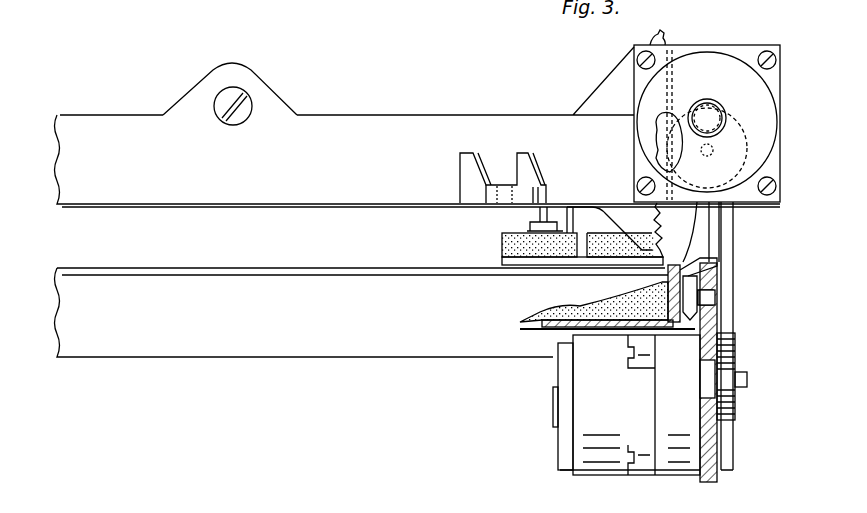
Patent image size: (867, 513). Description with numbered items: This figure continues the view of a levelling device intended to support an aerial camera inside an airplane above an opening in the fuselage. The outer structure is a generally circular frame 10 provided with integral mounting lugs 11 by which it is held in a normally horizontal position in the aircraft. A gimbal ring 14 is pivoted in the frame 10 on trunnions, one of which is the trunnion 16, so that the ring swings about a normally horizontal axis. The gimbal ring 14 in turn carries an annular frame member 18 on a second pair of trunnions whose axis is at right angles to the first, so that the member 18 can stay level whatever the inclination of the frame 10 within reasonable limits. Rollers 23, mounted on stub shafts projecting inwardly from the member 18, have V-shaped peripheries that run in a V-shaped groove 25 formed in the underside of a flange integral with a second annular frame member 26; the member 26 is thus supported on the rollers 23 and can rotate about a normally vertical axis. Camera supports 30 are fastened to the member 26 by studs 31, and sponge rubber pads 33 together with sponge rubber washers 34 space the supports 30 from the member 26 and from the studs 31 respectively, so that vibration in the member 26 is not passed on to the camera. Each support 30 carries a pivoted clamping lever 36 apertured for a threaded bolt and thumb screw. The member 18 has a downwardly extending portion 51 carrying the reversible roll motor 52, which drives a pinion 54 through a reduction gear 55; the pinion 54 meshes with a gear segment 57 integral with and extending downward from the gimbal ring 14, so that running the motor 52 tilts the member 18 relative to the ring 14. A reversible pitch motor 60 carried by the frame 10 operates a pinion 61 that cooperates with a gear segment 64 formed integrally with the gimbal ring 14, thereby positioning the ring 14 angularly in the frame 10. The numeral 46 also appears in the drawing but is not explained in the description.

The circular frame 10 is at (414, 128).
The mounting lug 11 is at (466, 200).
The gimbal ring 14 is at (350, 206).
The trunnion 16 is at (247, 104).
The annular frame member 18 is at (408, 355).
The roller 23 is at (715, 310).
The V-shaped groove 25 is at (710, 261).
The annular frame member 26 is at (556, 330).
The camera support 30 is at (500, 262).
The stud 31 is at (538, 218).
The sponge rubber pad 33 is at (590, 305).
The sponge rubber washer 34 is at (504, 243).
The clamping lever 36 is at (565, 208).
The lead 46 is at (186, 0).
The downwardly extending portion 51 is at (718, 447).
The roll motor 52 is at (620, 409).
The pinion 54 is at (735, 357).
The reduction gear 55 is at (688, 466).
The gear segment 57 is at (725, 319).
The pitch motor 60 is at (716, 86).
The pinion 61 is at (682, 160).
The gear segment 64 is at (664, 32).